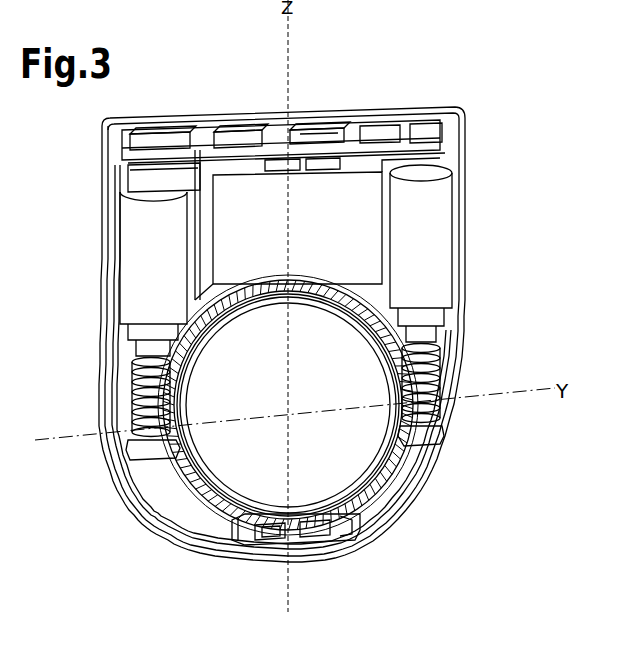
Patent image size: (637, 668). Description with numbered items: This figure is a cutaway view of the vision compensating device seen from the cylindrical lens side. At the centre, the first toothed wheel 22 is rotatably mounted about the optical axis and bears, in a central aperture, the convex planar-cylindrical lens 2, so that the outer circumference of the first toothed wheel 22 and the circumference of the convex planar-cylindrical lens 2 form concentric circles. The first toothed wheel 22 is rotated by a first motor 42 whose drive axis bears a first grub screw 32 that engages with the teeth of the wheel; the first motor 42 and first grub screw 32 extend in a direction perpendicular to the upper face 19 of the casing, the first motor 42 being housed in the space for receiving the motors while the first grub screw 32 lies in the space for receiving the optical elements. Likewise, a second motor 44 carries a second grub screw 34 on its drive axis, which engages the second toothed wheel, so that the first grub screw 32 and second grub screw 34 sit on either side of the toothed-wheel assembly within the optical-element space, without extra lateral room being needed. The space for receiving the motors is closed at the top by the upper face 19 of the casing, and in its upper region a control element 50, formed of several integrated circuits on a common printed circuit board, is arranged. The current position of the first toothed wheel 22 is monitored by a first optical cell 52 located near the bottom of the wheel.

The convex planar-cylindrical lens 2 is at (250, 457).
The upper face 19 is at (410, 108).
The first toothed wheel 22 is at (372, 463).
The first grub screw 32 is at (445, 374).
The second grub screw 34 is at (132, 395).
The first motor 42 is at (445, 256).
The second motor 44 is at (130, 272).
The control element 50 is at (317, 127).
The first optical cell 52 is at (278, 543).